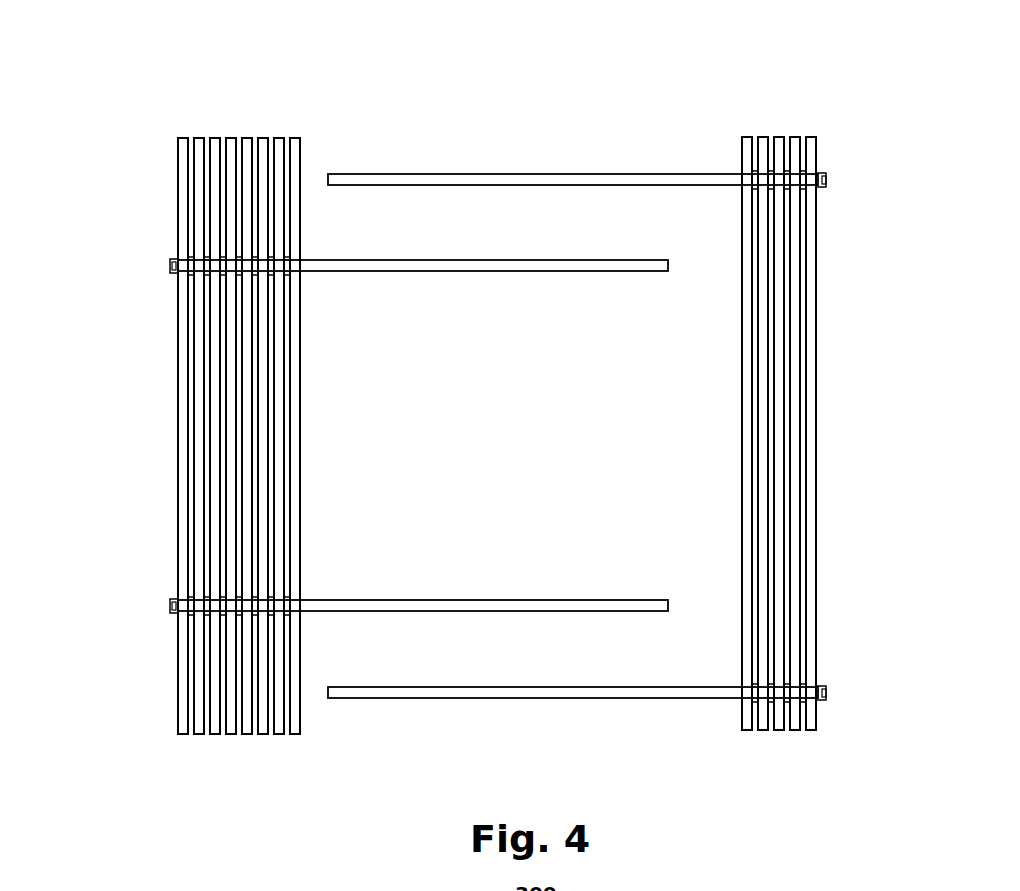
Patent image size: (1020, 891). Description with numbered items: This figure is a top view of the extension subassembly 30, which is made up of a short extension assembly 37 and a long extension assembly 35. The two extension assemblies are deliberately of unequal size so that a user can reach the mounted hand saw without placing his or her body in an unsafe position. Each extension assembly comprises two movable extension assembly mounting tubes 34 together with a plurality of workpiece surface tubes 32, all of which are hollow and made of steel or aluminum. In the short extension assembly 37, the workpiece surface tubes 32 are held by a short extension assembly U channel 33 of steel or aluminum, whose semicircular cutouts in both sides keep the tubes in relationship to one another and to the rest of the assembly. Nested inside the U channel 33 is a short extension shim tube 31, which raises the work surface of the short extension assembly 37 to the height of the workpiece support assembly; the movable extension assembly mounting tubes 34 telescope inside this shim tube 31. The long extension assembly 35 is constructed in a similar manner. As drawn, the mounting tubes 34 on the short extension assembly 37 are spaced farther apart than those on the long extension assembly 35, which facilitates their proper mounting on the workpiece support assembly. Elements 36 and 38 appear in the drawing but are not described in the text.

The extension subassembly 30 is at (138, 95).
The short extension shim tube 31 is at (803, 171).
The workpiece surface tubes 32 is at (178, 205).
The short extension assembly U channel 33 is at (803, 188).
The movable extension assembly mounting tubes 34 is at (506, 271).
The long extension assembly 35 is at (242, 780).
The plate 36 is at (194, 260).
The short extension assembly 37 is at (781, 760).
The spacer 38 is at (207, 276).